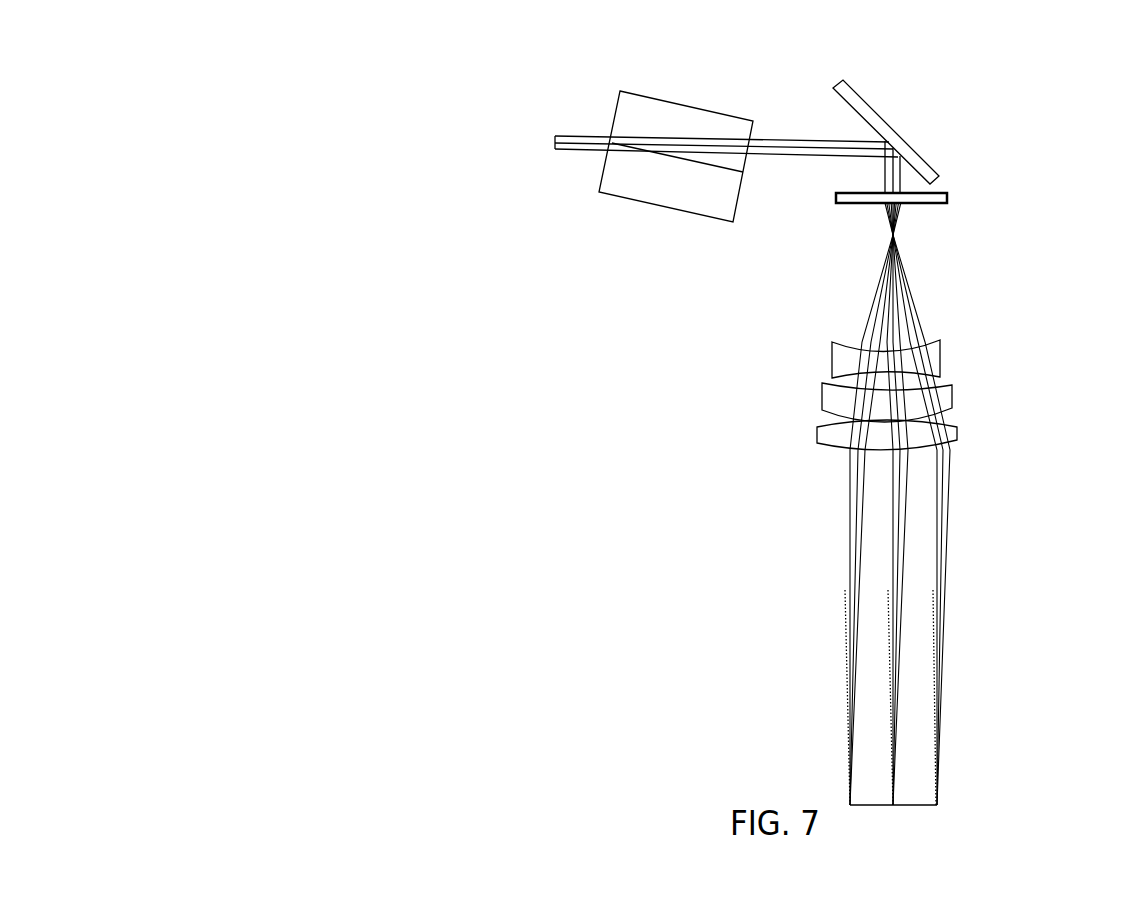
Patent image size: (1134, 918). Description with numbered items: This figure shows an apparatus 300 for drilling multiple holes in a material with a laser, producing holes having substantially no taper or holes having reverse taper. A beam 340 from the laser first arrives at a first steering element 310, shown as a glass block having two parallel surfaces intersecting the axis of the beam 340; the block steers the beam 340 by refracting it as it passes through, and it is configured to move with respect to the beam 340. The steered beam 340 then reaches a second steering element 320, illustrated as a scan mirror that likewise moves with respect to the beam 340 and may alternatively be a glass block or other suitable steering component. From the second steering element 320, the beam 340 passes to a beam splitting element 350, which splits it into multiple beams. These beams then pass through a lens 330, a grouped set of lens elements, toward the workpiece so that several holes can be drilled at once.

The apparatus 300 is at (268, 123).
The first steering element 310 is at (625, 195).
The beam 340 is at (820, 140).
The second steering element 320 is at (887, 122).
The beam splitting element 350 is at (947, 196).
The lens 330 is at (792, 457).